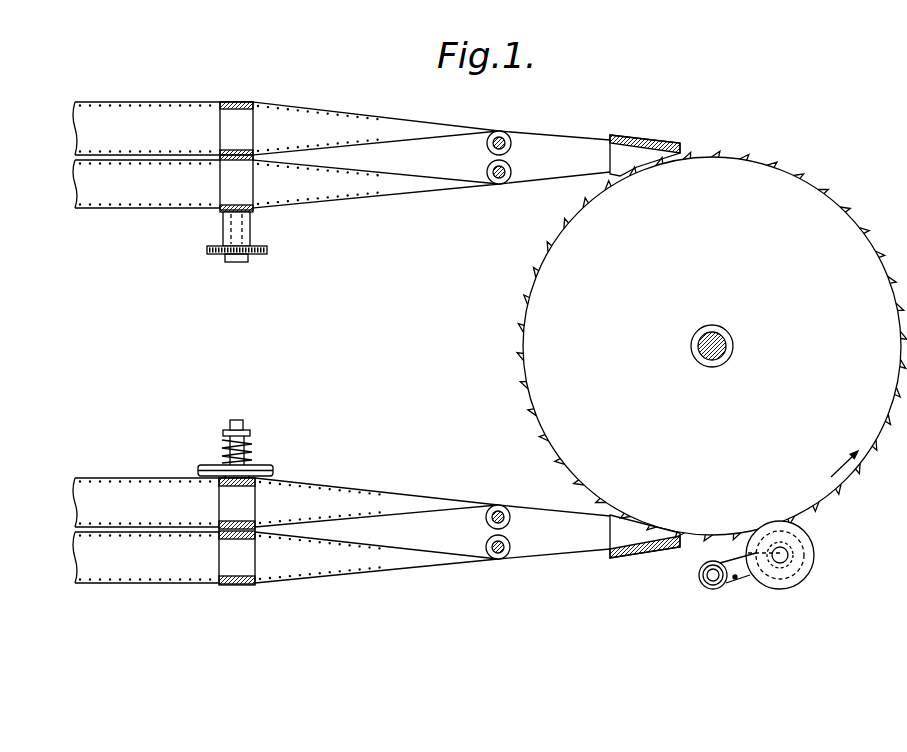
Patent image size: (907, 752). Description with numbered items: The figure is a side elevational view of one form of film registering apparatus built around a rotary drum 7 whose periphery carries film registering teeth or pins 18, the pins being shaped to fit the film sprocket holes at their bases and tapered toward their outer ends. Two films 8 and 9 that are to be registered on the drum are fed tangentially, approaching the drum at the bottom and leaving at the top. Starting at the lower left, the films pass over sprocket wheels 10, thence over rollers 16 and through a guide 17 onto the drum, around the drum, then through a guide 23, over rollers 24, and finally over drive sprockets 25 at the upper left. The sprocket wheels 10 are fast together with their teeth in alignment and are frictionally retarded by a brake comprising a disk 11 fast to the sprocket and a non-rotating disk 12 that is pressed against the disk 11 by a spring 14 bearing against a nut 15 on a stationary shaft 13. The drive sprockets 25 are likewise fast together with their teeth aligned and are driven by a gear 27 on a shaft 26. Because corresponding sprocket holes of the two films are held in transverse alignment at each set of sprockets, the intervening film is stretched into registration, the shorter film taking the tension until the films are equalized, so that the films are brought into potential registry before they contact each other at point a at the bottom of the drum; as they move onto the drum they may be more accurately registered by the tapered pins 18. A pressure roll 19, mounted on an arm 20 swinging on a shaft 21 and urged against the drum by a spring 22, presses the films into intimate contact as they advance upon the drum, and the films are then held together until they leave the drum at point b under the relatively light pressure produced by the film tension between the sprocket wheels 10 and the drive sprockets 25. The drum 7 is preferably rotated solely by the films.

The rotary drum 7 is at (808, 208).
The contact point a is at (728, 533).
The leaving point b is at (733, 157).
The film 8 is at (103, 500).
The film 9 is at (98, 563).
The sprocket wheels 10 is at (237, 560).
The disk 11 is at (258, 478).
The non-rotating disk 12 is at (266, 466).
The stationary shaft 13 is at (249, 437).
The spring 14 is at (223, 443).
The nut 15 is at (232, 421).
The rollers 16 is at (507, 556).
The guide 17 is at (615, 559).
The film registering teeth or pins 18 is at (560, 463).
The pressure roll 19 is at (798, 575).
The arm 20 is at (747, 573).
The shaft 21 is at (715, 579).
The spring 22 is at (737, 580).
The guide 23 is at (635, 139).
The rollers 24 is at (511, 153).
The drive sprockets 25 is at (233, 182).
The shaft 26 is at (237, 262).
The gear 27 is at (207, 250).